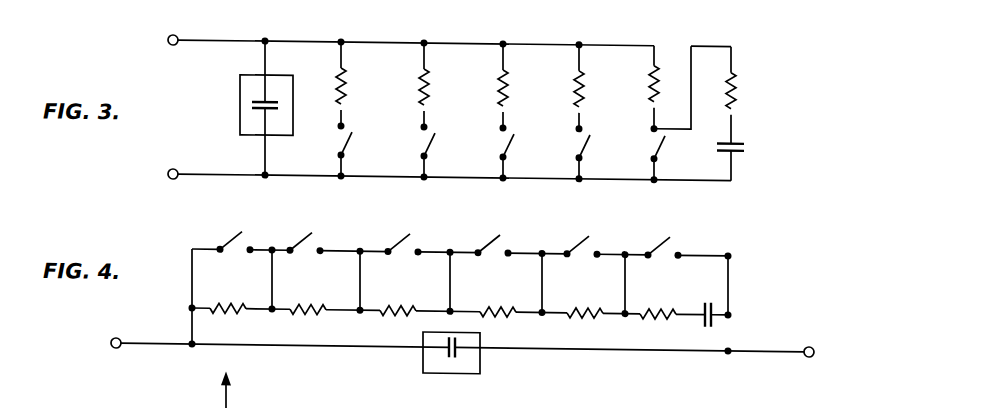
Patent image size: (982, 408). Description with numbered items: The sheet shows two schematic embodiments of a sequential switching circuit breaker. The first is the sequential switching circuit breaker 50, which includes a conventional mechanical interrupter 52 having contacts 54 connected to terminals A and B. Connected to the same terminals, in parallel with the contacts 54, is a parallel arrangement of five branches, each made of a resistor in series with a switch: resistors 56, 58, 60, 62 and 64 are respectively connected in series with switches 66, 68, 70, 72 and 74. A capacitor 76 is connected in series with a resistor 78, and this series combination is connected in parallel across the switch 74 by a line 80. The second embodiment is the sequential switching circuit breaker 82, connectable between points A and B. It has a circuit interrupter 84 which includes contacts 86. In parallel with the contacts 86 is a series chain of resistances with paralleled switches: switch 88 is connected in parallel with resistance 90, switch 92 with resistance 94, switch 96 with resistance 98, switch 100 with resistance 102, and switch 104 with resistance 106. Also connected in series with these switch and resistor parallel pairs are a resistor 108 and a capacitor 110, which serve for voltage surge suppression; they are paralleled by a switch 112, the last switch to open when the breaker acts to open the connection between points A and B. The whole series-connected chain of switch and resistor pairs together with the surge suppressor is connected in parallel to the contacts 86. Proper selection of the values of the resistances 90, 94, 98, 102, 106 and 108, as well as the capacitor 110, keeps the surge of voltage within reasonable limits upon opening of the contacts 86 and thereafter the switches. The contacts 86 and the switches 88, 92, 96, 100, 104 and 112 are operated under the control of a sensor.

In FIG. 3, the sequential switching circuit breaker 50 is at (448, 31).
In FIG. 3, the mechanical interrupter 52 is at (240, 86).
In FIG. 3, the contacts 54 is at (252, 108).
In FIG. 3, the resistor 56 is at (345, 86).
In FIG. 3, the resistor 58 is at (428, 86).
In FIG. 3, the resistor 60 is at (507, 85).
In FIG. 3, the resistor 62 is at (583, 84).
In FIG. 3, the resistor 64 is at (650, 95).
In FIG. 3, the switch 66 is at (352, 136).
In FIG. 3, the switch 68 is at (430, 141).
In FIG. 3, the switch 70 is at (509, 140).
In FIG. 3, the switch 72 is at (586, 141).
In FIG. 3, the switch 74 is at (661, 141).
In FIG. 3, the capacitor 76 is at (745, 136).
In FIG. 3, the resistor 78 is at (736, 94).
In FIG. 3, the line 80 is at (691, 80).
In FIG. 4, the sequential switching circuit breaker 82 is at (525, 231).
In FIG. 4, the circuit interrupter 84 is at (480, 361).
In FIG. 4, the contacts 86 is at (447, 350).
In FIG. 4, the switch 88 is at (238, 238).
In FIG. 4, the resistance 90 is at (236, 304).
In FIG. 4, the switch 92 is at (306, 238).
In FIG. 4, the resistance 94 is at (316, 304).
In FIG. 4, the switch 96 is at (404, 238).
In FIG. 4, the resistance 98 is at (404, 305).
In FIG. 4, the switch 100 is at (494, 237).
In FIG. 4, the resistance 102 is at (499, 305).
In FIG. 4, the switch 104 is at (583, 237).
In FIG. 4, the resistance 106 is at (585, 305).
In FIG. 4, the resistor 108 is at (665, 305).
In FIG. 4, the capacitor 110 is at (716, 298).
In FIG. 4, the switch 112 is at (665, 237).